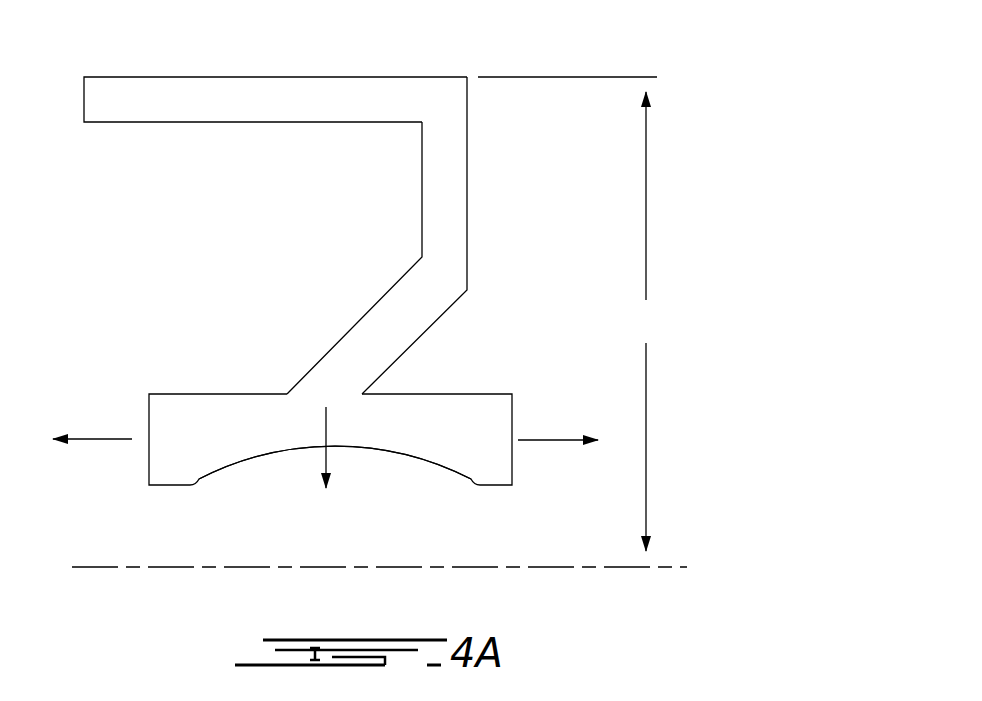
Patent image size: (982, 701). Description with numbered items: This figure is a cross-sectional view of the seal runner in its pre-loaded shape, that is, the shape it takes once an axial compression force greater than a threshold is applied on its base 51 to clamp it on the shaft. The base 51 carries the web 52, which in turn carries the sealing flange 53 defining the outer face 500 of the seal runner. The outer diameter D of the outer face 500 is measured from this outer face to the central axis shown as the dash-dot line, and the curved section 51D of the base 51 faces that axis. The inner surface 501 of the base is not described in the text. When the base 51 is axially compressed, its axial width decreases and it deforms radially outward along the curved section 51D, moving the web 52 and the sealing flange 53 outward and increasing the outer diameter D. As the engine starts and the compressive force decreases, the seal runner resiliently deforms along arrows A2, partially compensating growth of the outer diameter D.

The outer face 500 is at (307, 314).
The sealing flange 53 is at (278, 76).
The web 52 is at (443, 173).
The base 51 is at (307, 480).
The inner surface 501 is at (278, 502).
The curved section 51D is at (302, 448).
The arrows A2 is at (94, 437).
The outer diameter D is at (567, 314).